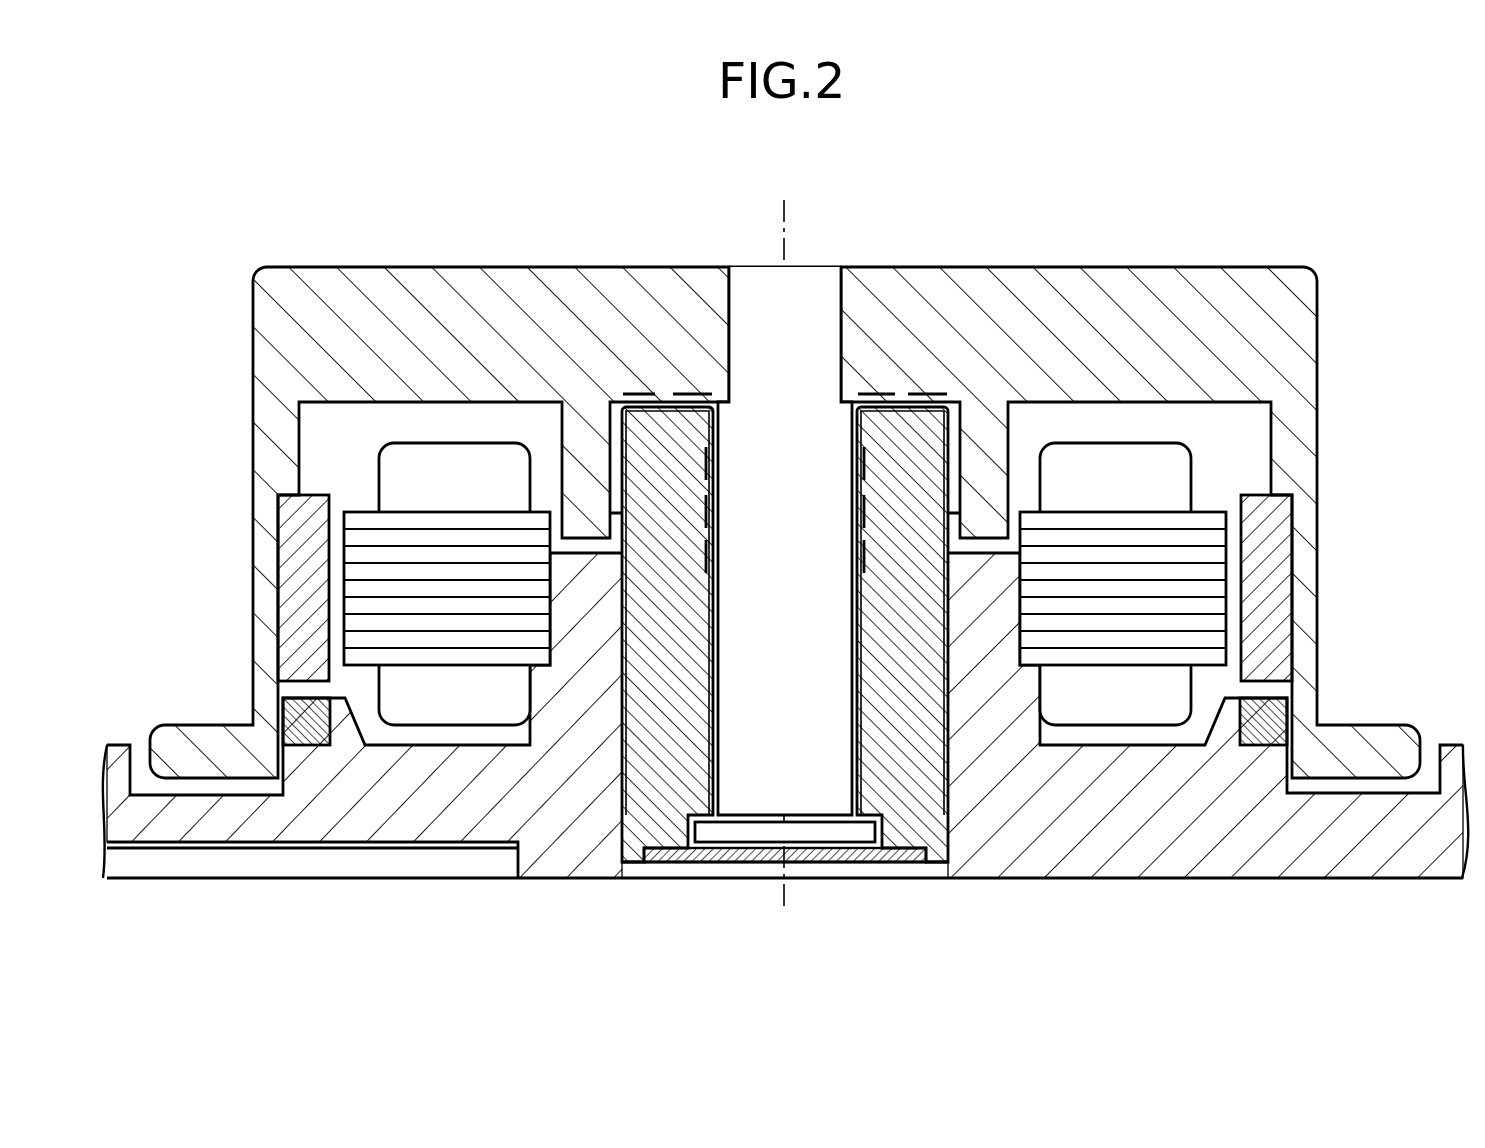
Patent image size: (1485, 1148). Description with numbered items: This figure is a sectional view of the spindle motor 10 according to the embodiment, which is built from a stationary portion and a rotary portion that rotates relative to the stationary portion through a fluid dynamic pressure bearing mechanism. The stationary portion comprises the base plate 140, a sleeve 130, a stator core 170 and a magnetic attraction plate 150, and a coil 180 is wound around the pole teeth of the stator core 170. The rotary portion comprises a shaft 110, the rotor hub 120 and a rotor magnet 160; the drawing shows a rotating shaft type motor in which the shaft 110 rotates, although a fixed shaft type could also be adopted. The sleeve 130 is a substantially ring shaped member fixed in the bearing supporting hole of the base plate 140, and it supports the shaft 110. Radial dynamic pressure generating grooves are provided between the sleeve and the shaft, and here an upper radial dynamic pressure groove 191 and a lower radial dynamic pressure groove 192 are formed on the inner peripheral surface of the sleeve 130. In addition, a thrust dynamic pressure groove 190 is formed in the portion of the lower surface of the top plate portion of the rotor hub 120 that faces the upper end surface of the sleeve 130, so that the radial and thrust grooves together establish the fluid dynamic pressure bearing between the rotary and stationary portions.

The spindle motor 10 is at (557, 208).
The shaft 110 is at (760, 290).
The rotor hub 120 is at (372, 287).
The sleeve 130 is at (670, 798).
The base plate 140 is at (312, 820).
The magnetic attraction plate 150 is at (305, 715).
The rotor magnet 160 is at (303, 593).
The stator core 170 is at (352, 537).
The coil 180 is at (400, 467).
The thrust dynamic pressure groove 190 is at (884, 383).
The upper radial dynamic pressure groove 191 is at (693, 455).
The lower radial dynamic pressure groove 192 is at (873, 716).